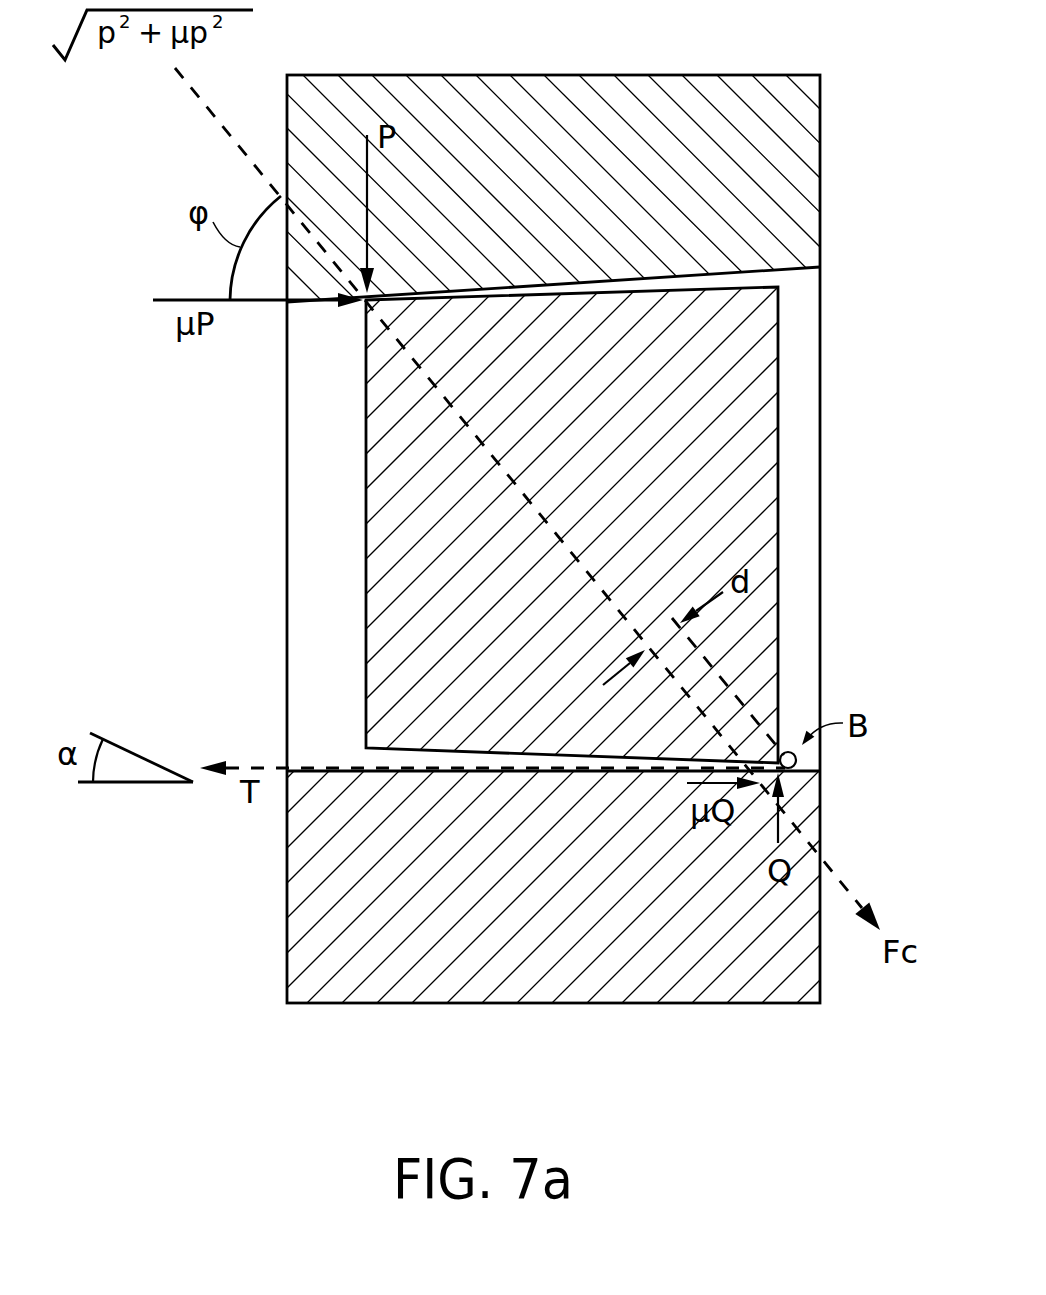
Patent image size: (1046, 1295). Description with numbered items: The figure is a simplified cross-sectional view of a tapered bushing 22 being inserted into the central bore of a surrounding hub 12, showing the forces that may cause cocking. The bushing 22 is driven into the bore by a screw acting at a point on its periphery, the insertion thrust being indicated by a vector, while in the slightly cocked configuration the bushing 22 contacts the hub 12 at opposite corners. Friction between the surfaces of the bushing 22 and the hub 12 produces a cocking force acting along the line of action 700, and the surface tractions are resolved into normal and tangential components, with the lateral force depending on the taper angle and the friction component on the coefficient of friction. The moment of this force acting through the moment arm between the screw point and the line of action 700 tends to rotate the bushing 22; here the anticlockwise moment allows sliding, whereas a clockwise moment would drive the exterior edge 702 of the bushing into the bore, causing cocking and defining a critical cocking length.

The hub 12 is at (530, 225).
The bushing 22 is at (523, 525).
The line of action of the cocking force 700 is at (451, 404).
The exterior edge of the bushing 702 is at (787, 772).